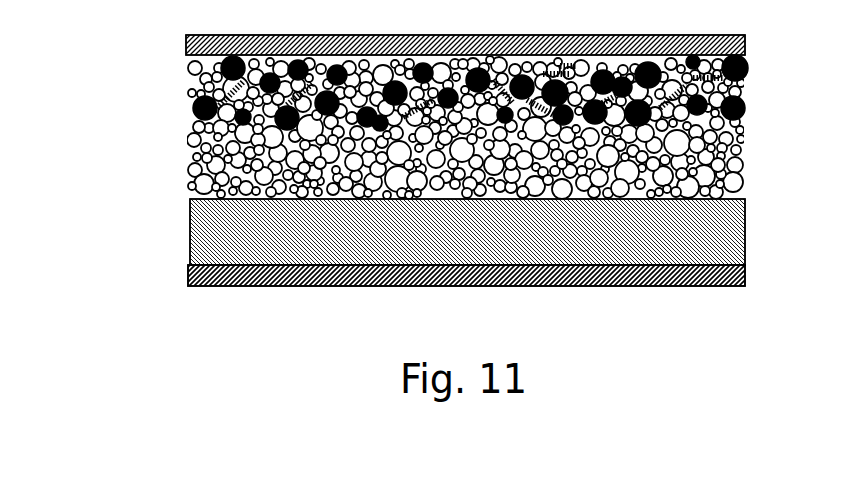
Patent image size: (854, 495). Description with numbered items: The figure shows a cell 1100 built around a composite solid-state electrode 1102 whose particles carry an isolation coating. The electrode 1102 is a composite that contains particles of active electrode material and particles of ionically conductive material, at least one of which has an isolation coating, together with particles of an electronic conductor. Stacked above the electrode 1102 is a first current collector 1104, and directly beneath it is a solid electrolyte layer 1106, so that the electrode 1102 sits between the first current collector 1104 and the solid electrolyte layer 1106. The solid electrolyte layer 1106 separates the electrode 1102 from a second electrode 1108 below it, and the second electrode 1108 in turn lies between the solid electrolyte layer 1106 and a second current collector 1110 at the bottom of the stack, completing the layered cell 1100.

The cell 1100 is at (138, 278).
The electrode 1102 is at (173, 55).
The first current collector 1104 is at (186, 49).
The solid electrolyte layer 1106 is at (173, 137).
The second electrode 1108 is at (190, 230).
The second current collector 1110 is at (190, 270).